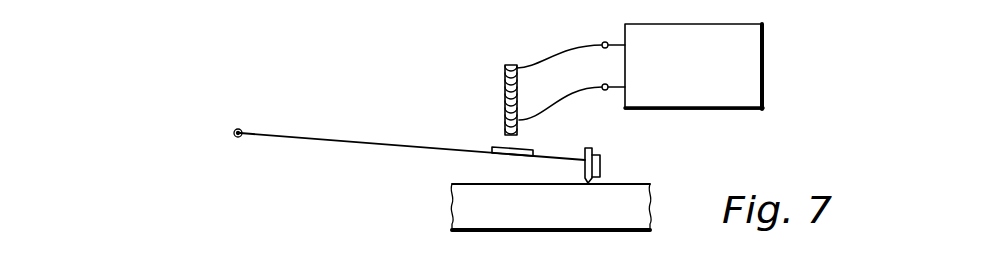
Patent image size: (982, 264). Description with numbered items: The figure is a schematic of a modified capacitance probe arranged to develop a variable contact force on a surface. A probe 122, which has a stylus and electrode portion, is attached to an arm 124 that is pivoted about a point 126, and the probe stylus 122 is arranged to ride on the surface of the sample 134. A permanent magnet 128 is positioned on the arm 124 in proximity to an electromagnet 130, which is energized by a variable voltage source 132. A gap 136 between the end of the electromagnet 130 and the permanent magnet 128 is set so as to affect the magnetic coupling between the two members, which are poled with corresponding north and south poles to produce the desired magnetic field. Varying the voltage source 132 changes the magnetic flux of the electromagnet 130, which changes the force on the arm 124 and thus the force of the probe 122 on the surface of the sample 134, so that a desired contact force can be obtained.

The probe 122 is at (623, 160).
The arm 124 is at (338, 141).
The pivot point 126 is at (237, 128).
The permanent magnet 128 is at (491, 148).
The electromagnet 130 is at (504, 95).
The variable voltage source 132 is at (765, 68).
The sample 134 is at (448, 200).
The gap 136 is at (513, 142).